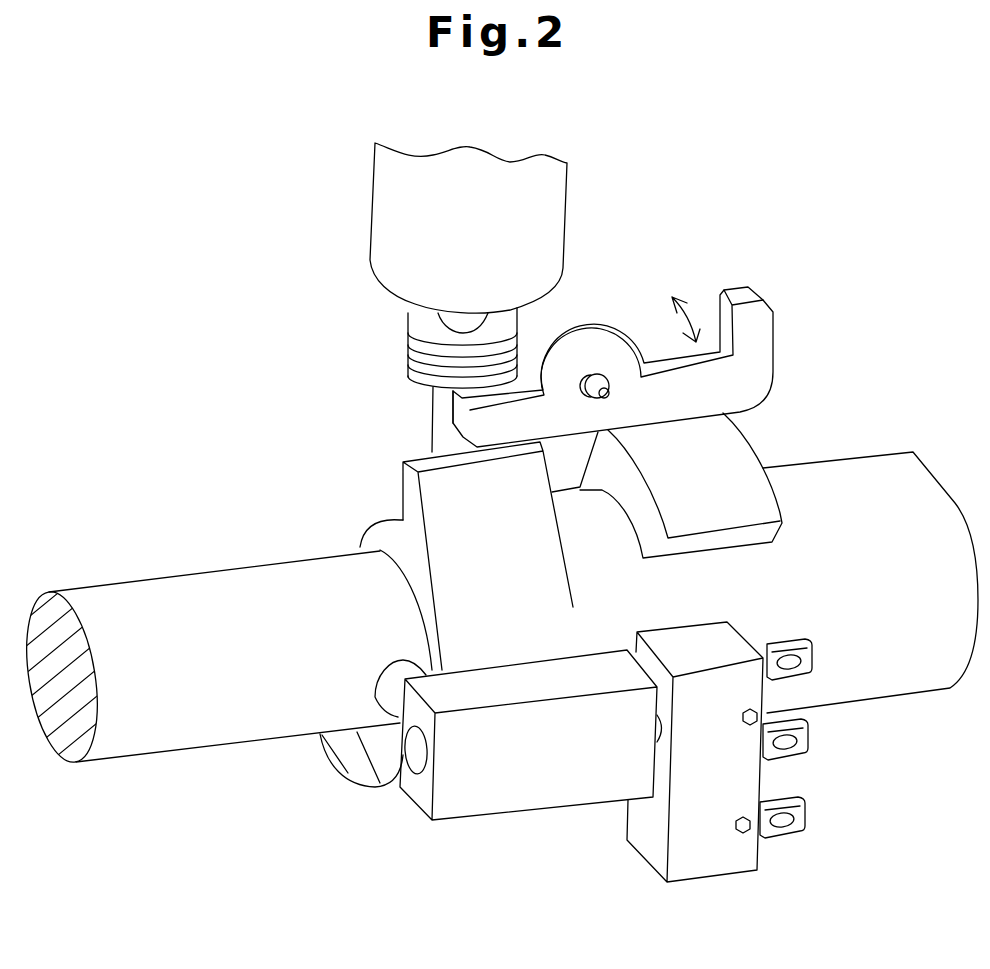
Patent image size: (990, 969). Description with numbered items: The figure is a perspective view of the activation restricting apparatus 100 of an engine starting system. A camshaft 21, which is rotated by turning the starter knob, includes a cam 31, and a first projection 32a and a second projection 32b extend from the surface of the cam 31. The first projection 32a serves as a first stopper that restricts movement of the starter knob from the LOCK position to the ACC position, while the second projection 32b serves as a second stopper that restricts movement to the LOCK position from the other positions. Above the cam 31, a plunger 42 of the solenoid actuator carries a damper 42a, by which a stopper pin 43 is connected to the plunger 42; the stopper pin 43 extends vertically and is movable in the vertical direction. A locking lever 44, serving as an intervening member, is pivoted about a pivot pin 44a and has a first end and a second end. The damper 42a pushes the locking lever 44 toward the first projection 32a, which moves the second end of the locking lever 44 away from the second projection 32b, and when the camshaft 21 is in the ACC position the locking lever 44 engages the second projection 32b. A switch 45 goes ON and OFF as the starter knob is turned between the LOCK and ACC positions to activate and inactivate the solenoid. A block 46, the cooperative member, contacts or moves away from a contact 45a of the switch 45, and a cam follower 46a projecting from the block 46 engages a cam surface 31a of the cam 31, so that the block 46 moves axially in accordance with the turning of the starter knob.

The activation restricting apparatus 100 is at (809, 200).
The camshaft 21 is at (170, 757).
The cam 31 is at (906, 686).
The cam surface 31a is at (347, 777).
The first projection 32a is at (408, 487).
The second projection 32b is at (770, 507).
The plunger 42 is at (374, 206).
The damper 42a is at (409, 337).
The stopper pin 43 is at (437, 428).
The locking lever 44 is at (770, 339).
The pivot pin 44a is at (608, 391).
The switch 45 is at (713, 870).
The contact 45a is at (660, 732).
The block 46 is at (487, 808).
The cam follower 46a is at (390, 676).